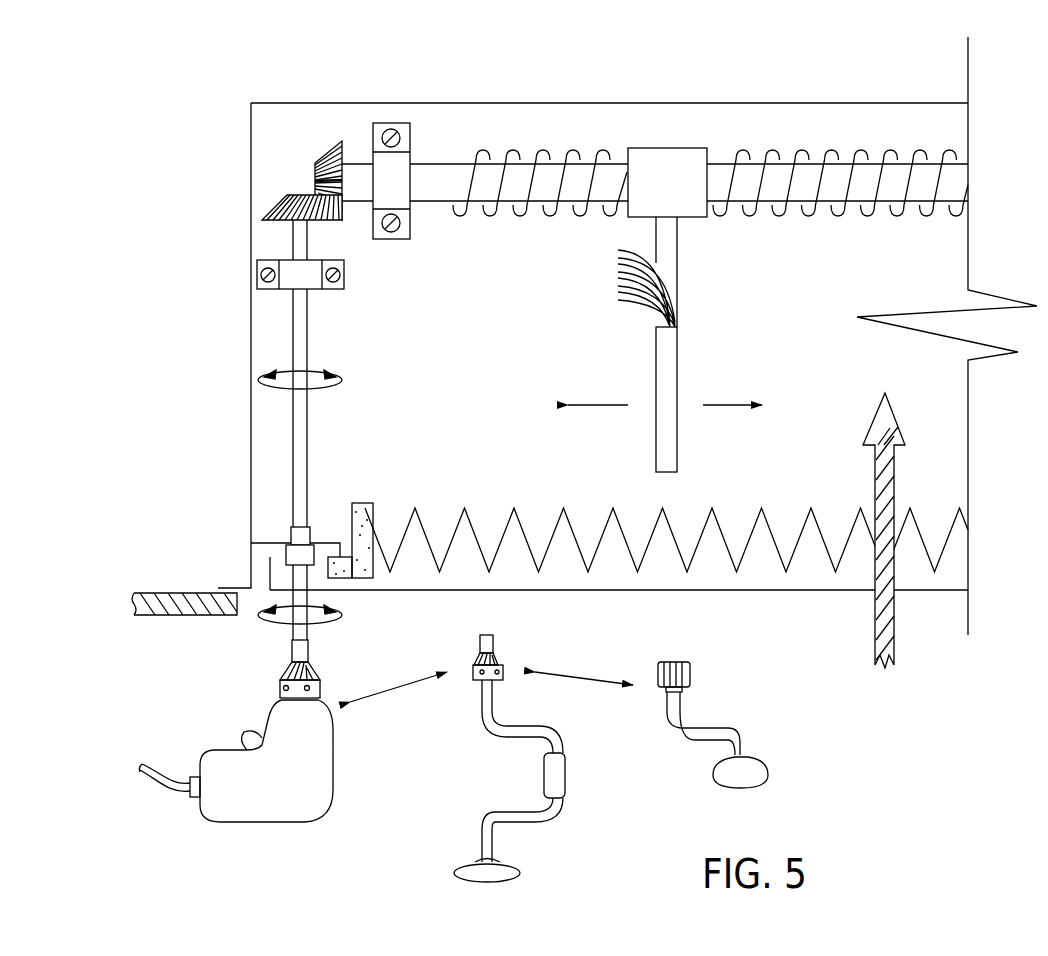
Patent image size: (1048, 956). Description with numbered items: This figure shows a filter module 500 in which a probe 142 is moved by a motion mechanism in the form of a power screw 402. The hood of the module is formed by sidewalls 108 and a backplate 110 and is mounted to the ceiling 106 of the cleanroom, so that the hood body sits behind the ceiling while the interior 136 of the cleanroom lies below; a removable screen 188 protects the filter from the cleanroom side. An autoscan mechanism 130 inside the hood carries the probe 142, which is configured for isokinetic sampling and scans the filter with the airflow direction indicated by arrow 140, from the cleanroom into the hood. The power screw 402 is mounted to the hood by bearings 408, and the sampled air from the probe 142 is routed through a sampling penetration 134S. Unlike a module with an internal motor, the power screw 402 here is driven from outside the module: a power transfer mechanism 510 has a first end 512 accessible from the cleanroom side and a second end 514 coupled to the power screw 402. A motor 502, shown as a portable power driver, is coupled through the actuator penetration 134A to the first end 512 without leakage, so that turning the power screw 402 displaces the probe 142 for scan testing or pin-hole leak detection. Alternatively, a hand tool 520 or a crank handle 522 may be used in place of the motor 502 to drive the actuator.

The filter module 500 is at (227, 95).
The backplate 110 is at (490, 103).
The sidewalls 108 is at (250, 335).
The autoscan mechanism 130 is at (447, 125).
The screen 188 is at (927, 594).
The interior of the cleanroom 136 is at (899, 752).
The bearings 408 is at (385, 124).
The power screw 402 is at (538, 154).
The probe 142 is at (677, 390).
The sampling penetration 134S is at (606, 305).
The airflow direction arrow 140 is at (878, 467).
The power transfer mechanism 510 is at (311, 175).
The second end 514 is at (270, 203).
The first end 512 is at (292, 487).
The actuator control penetration 134A is at (290, 531).
The ceiling 106 is at (198, 592).
The motor 502 is at (256, 707).
The hand tool 520 is at (556, 803).
The crank handle 522 is at (730, 730).